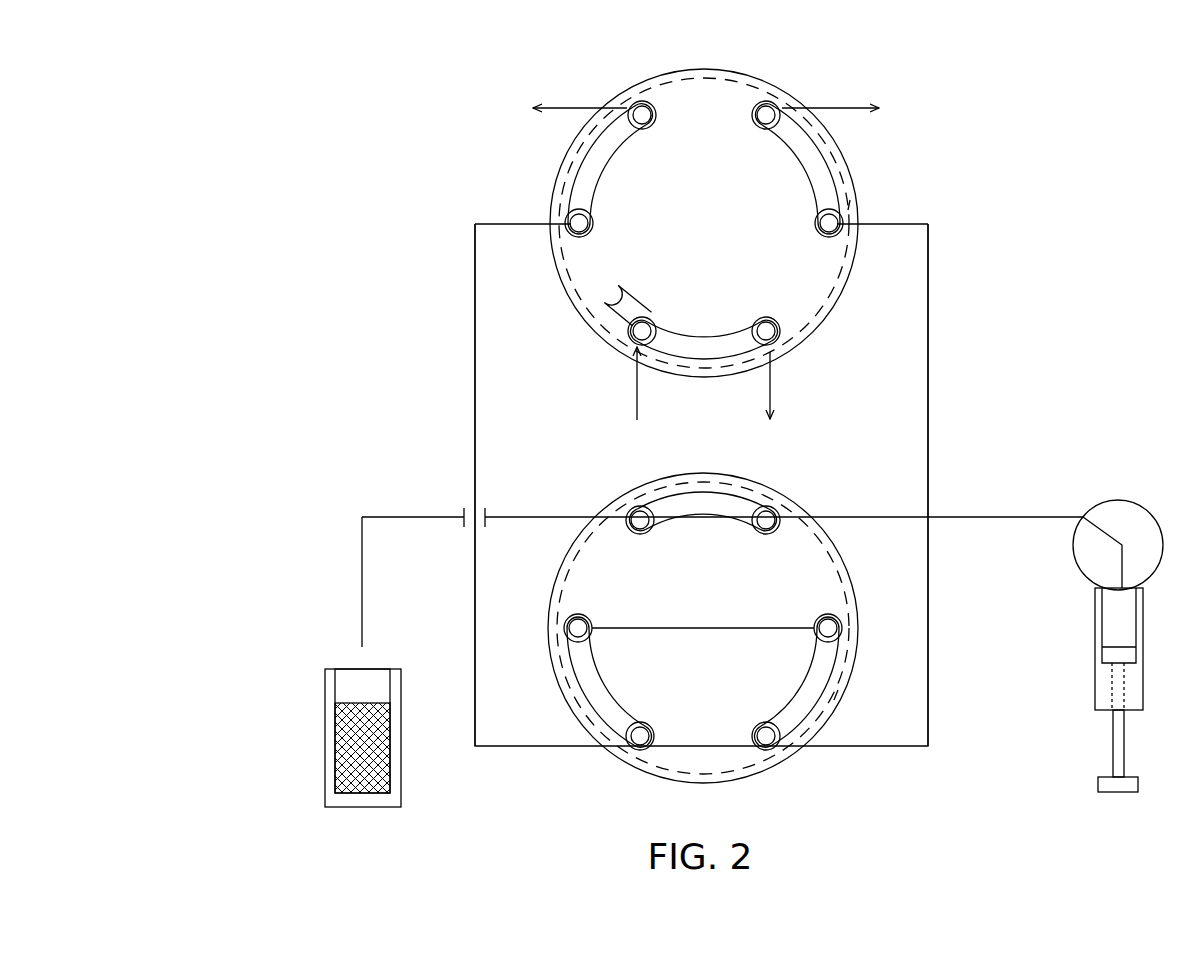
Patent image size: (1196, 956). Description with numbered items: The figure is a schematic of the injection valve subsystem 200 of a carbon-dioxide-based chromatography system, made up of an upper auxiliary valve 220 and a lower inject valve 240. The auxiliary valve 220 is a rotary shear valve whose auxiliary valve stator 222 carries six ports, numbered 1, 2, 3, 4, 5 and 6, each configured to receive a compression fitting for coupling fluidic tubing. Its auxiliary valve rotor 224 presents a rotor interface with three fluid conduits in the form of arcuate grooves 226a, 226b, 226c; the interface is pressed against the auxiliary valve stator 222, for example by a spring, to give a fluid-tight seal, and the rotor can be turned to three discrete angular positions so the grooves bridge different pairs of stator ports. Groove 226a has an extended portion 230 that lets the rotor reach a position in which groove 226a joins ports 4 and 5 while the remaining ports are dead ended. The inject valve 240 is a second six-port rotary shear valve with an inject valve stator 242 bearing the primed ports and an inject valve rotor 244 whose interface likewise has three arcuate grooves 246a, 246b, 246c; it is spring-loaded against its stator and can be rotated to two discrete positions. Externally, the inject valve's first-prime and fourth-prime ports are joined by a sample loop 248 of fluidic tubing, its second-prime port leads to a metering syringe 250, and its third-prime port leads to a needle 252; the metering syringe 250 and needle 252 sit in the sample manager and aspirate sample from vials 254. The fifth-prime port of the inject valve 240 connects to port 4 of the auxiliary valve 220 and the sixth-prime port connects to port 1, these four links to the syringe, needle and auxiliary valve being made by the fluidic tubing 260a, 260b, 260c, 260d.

The injection valve subsystem 200 is at (236, 97).
The auxiliary valve 220 is at (622, 67).
The auxiliary valve stator 222 is at (559, 188).
The auxiliary valve rotor 224 is at (848, 188).
The arcuate groove 226a is at (702, 342).
The arcuate groove 226b is at (605, 160).
The arcuate groove 226c is at (796, 158).
The extended portion 230 is at (614, 314).
The inject valve 240 is at (588, 802).
The inject valve stator 242 is at (560, 592).
The inject valve rotor 244 is at (836, 692).
The arcuate groove 246a is at (605, 692).
The arcuate groove 246b is at (702, 512).
The arcuate groove 246c is at (800, 692).
The sample loop 248 is at (697, 626).
The metering syringe 250 is at (1148, 503).
The needle 252 is at (360, 612).
The vial 254 is at (323, 690).
The fluidic tubing 260a is at (929, 412).
The fluidic tubing 260b is at (474, 411).
The fluidic tubing 260c is at (1000, 517).
The fluidic tubing 260d is at (410, 517).
The port 1 is at (812, 223).
The port 2 is at (760, 126).
The port 3 is at (648, 126).
The port 4 is at (595, 223).
The port 5 is at (647, 320).
The port 6 is at (760, 320).